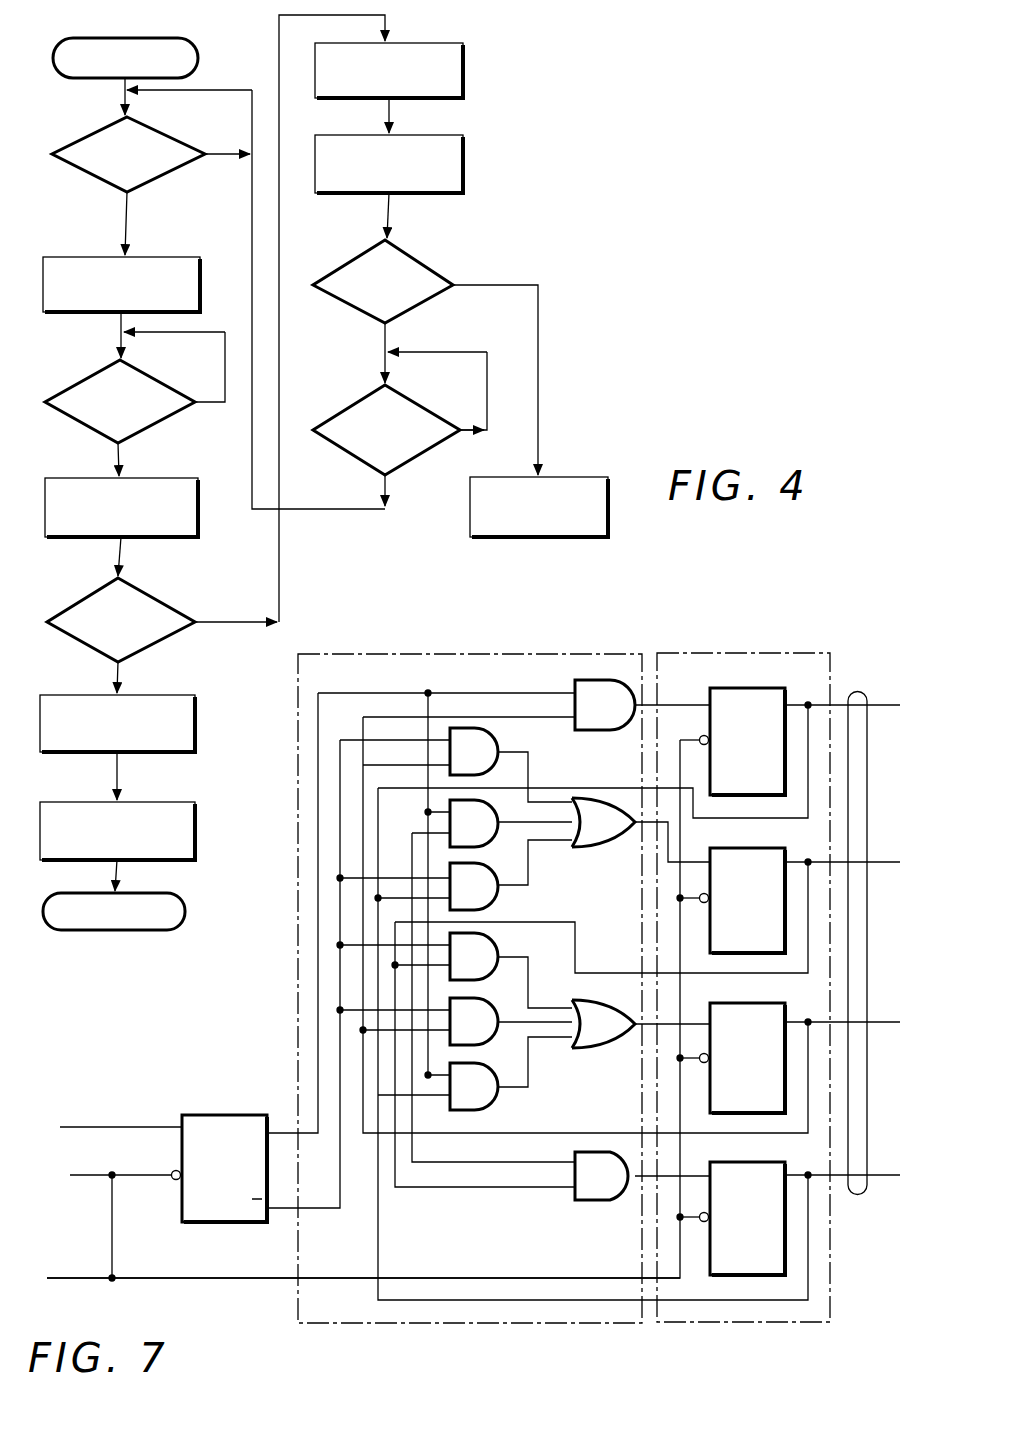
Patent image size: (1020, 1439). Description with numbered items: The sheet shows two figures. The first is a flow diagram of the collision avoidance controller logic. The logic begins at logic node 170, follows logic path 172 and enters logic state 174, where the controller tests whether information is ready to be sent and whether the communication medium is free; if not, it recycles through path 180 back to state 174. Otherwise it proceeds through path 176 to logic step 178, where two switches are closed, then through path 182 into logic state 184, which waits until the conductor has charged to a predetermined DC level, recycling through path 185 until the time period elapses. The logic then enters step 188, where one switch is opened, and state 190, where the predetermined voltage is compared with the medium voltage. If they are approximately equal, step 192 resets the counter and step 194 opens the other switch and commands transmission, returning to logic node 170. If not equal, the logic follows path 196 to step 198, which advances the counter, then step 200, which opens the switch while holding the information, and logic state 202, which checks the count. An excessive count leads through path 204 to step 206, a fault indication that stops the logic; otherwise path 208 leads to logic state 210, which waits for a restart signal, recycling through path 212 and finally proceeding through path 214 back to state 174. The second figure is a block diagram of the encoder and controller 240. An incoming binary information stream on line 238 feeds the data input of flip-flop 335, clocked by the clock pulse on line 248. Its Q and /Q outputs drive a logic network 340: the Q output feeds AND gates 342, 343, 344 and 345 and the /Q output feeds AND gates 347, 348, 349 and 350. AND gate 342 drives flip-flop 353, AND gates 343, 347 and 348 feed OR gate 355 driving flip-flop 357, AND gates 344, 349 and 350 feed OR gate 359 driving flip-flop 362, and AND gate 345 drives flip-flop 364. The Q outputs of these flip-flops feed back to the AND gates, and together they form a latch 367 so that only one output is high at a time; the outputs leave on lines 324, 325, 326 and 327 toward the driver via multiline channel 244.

In FIG. 4, the logic node 170 is at (160, 38).
In FIG. 4, the logic path 172 is at (118, 87).
In FIG. 4, the logic state 174 is at (90, 128).
In FIG. 4, the path 176 is at (122, 200).
In FIG. 4, the logic step 178 is at (78, 243).
In FIG. 4, the path 180 is at (190, 95).
In FIG. 4, the path 182 is at (118, 325).
In FIG. 4, the logic state 184 is at (70, 380).
In FIG. 4, the path 185 is at (203, 336).
In FIG. 4, the step 188 is at (80, 470).
In FIG. 4, the state 190 is at (82, 600).
In FIG. 4, the step 192 is at (76, 695).
In FIG. 4, the step 194 is at (76, 802).
In FIG. 4, the path 196 is at (280, 572).
In FIG. 4, the step 198 is at (432, 43).
In FIG. 4, the step 200 is at (442, 135).
In FIG. 4, the logic state 202 is at (418, 258).
In FIG. 4, the path 204 is at (492, 293).
In FIG. 4, the step 206 is at (575, 477).
In FIG. 4, the path 208 is at (380, 337).
In FIG. 4, the logic state 210 is at (328, 410).
In FIG. 4, the path 212 is at (425, 355).
In FIG. 4, the path 214 is at (333, 509).
In FIG. 7, the line 238 is at (148, 1127).
In FIG. 7, the encoder and controller 240 is at (842, 656).
In FIG. 7, the multiline channel 244 is at (858, 1195).
In FIG. 7, the line 248 is at (83, 1278).
In FIG. 7, the line 324 is at (876, 705).
In FIG. 7, the line 325 is at (876, 862).
In FIG. 7, the line 326 is at (876, 1022).
In FIG. 7, the line 327 is at (876, 1175).
In FIG. 7, the flip-flop 335 is at (215, 1222).
In FIG. 7, the logic network 340 is at (592, 654).
In FIG. 7, the AND gate 342 is at (608, 730).
In FIG. 7, the AND gate 343 is at (494, 838).
In FIG. 7, the AND gate 344 is at (488, 1107).
In FIG. 7, the AND gate 345 is at (606, 1200).
In FIG. 7, the AND gate 347 is at (498, 752).
In FIG. 7, the AND gate 348 is at (488, 900).
In FIG. 7, the AND gate 349 is at (498, 950).
In FIG. 7, the AND gate 350 is at (476, 1044).
In FIG. 7, the flip-flop 353 is at (730, 688).
In FIG. 7, the OR gate 355 is at (605, 847).
In FIG. 7, the flip-flop 357 is at (730, 848).
In FIG. 7, the OR gate 359 is at (585, 1048).
In FIG. 7, the flip-flop 362 is at (730, 1003).
In FIG. 7, the flip-flop 364 is at (730, 1162).
In FIG. 7, the latch 367 is at (776, 653).